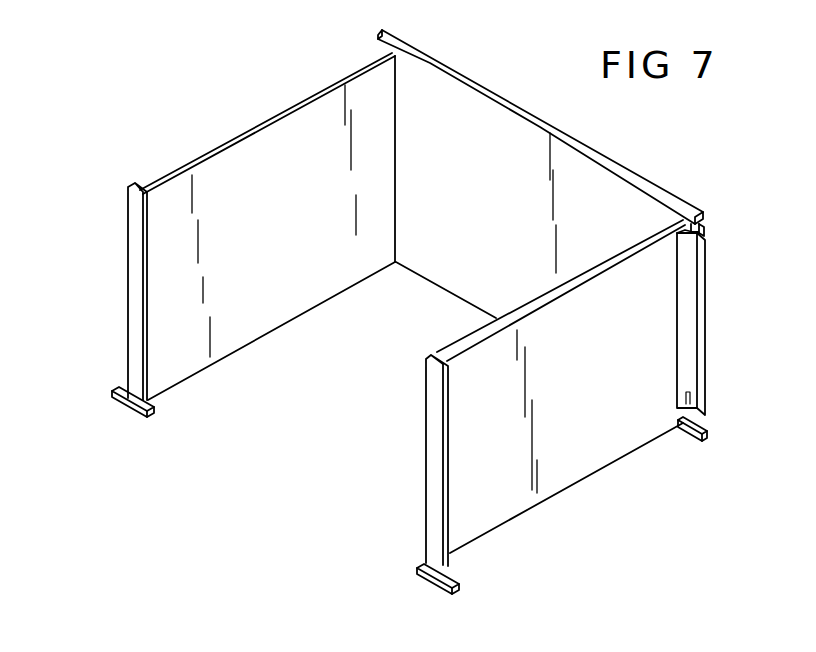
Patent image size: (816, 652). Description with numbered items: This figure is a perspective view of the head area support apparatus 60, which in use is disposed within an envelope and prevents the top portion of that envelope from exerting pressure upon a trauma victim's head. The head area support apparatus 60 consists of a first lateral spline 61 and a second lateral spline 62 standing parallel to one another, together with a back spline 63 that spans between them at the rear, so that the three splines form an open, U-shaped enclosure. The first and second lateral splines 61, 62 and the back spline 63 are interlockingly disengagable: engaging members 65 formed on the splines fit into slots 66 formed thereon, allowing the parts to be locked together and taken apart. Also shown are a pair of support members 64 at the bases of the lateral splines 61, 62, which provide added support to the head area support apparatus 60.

The head area support apparatus 60 is at (248, 105).
The first lateral spline 61 is at (194, 162).
The second lateral spline 62 is at (607, 463).
The back spline 63 is at (627, 174).
The support member 64 is at (124, 408).
The engaging member 65 is at (700, 236).
The slot 66 is at (707, 428).